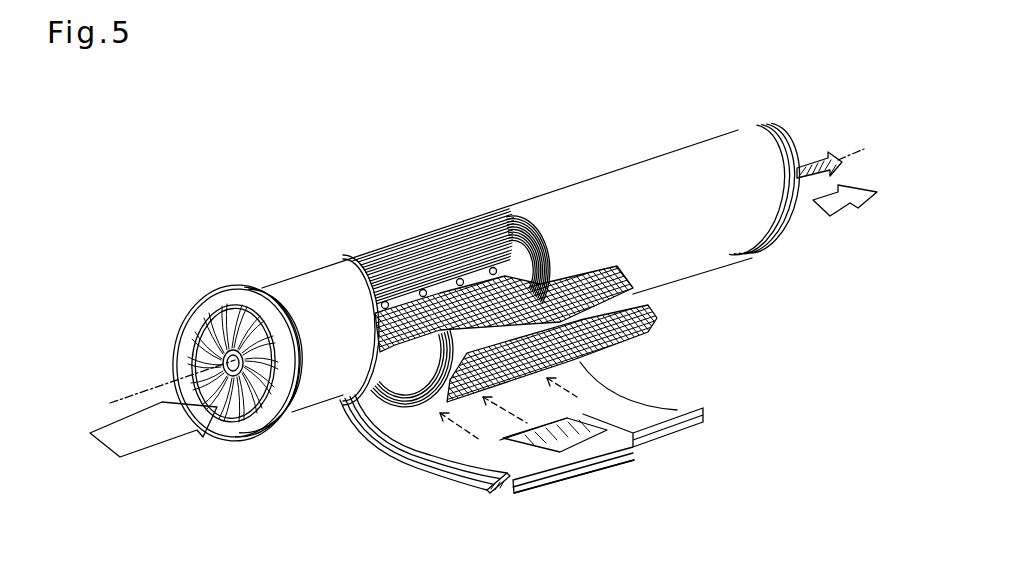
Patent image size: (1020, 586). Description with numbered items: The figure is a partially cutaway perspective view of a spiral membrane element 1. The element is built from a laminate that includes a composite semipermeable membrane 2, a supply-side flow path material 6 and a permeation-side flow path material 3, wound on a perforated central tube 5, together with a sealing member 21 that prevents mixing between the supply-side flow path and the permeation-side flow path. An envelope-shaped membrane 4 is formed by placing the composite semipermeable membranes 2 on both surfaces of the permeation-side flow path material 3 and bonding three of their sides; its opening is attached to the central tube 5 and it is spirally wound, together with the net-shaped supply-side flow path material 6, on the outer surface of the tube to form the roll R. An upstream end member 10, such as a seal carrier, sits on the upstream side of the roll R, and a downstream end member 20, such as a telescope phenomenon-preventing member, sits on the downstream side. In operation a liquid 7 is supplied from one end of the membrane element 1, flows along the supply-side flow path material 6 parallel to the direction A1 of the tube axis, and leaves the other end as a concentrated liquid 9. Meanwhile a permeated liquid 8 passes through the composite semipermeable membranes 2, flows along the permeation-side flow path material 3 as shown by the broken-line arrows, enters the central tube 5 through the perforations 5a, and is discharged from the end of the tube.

The membrane element 1 is at (722, 305).
The composite semipermeable membrane 2 is at (648, 305).
The permeation-side flow path material 3 is at (520, 432).
The envelope-shaped membrane 4 is at (683, 459).
The perforated central tube 5 is at (482, 273).
The perforations 5a is at (383, 300).
The supply-side flow path material 6 is at (592, 272).
The liquid 7 is at (136, 445).
The permeated liquid 8 is at (822, 158).
The concentrated liquid 9 is at (838, 208).
The upstream end member 10 is at (228, 285).
The downstream end member 20 is at (772, 256).
The sealing member 21 is at (605, 440).
The direction of the axis of the central tube A1 is at (126, 392).
The roll R is at (534, 181).